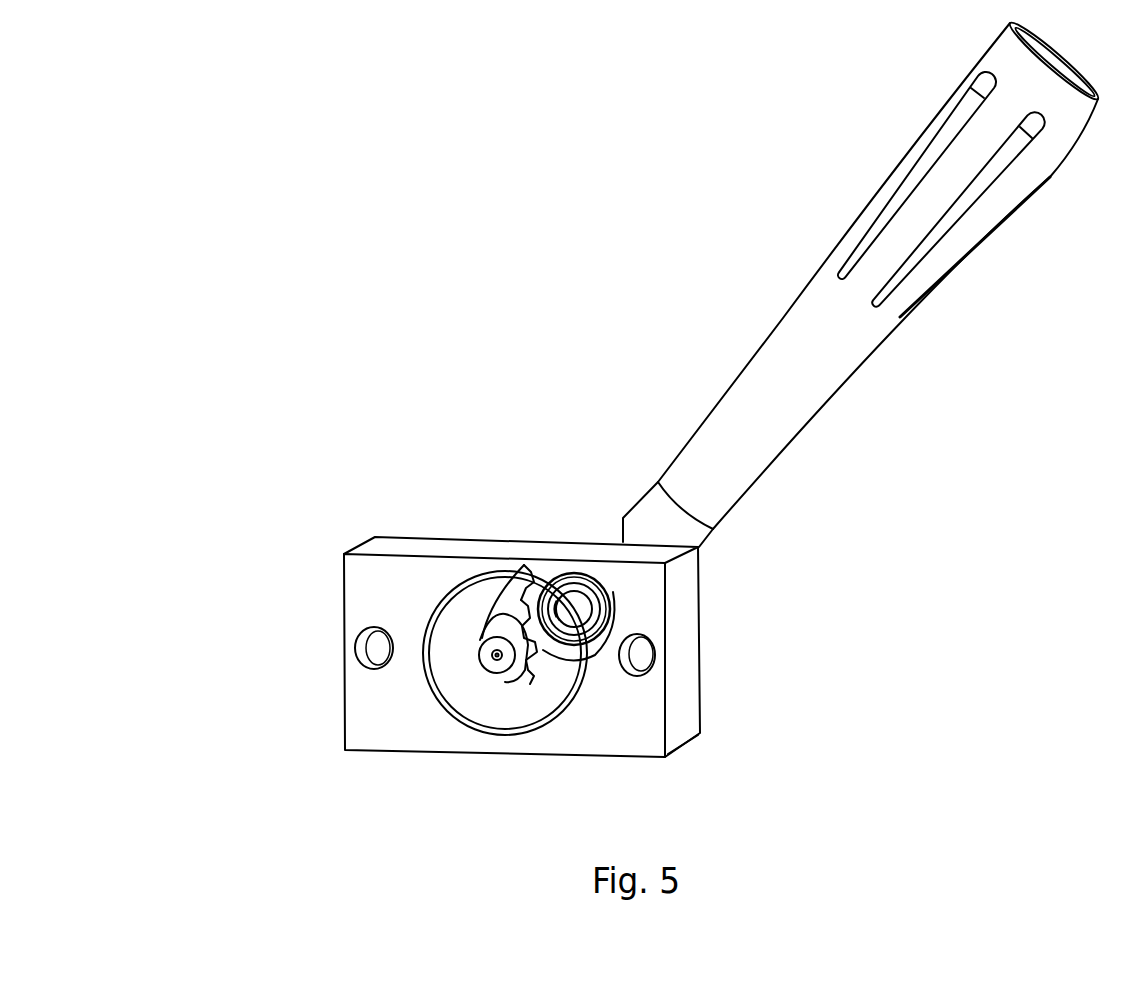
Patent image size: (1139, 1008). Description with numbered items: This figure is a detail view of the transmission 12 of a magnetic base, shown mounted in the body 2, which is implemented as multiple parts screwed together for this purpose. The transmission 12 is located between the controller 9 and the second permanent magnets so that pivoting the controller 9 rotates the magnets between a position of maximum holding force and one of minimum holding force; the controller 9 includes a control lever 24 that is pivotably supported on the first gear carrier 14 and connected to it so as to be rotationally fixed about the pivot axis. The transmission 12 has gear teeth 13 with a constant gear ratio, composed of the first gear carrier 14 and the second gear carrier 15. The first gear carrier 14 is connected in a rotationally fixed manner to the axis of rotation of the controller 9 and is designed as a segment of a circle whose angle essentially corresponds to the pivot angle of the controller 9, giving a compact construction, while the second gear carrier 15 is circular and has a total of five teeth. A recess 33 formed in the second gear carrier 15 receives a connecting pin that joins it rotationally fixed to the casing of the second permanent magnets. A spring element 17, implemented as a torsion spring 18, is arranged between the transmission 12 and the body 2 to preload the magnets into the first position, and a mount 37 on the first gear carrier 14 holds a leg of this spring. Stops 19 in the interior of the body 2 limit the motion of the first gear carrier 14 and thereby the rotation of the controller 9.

The body 2 is at (393, 597).
The controller 9 is at (863, 282).
The control lever 24 is at (653, 518).
The transmission 12 is at (450, 696).
The gear teeth 13 is at (538, 648).
The first gear carrier 14 is at (542, 587).
The second gear carrier 15 is at (478, 645).
The spring element 17 is at (612, 702).
The torsion spring 18 is at (573, 633).
The stops 19 is at (535, 578).
The recess 33 is at (498, 672).
The mount 37 is at (598, 600).